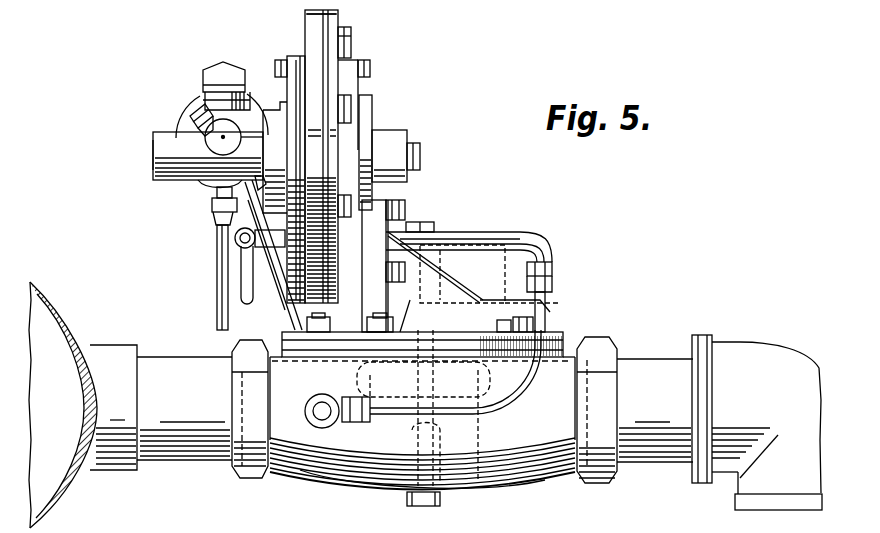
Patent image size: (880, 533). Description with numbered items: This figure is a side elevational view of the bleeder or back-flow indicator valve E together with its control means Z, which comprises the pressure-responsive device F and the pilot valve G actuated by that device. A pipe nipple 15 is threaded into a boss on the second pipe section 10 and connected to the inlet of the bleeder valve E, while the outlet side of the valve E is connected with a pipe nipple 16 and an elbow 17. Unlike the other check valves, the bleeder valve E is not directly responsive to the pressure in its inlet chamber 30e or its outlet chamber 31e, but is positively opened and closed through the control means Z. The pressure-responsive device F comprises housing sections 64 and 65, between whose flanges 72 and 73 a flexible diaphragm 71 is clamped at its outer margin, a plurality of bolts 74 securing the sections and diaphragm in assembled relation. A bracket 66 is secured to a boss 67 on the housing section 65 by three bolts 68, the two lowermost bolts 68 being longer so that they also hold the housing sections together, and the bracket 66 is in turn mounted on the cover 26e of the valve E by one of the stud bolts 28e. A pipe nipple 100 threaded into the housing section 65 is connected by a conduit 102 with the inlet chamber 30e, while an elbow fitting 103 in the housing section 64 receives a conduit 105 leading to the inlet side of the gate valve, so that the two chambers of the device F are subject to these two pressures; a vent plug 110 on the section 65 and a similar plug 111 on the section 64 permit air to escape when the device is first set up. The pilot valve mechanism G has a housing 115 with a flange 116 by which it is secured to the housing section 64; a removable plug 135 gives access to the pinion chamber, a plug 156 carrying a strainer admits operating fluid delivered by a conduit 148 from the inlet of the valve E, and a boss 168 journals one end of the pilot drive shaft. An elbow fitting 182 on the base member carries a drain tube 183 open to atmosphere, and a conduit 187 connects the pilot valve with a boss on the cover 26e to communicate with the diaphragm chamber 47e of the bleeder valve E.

The second pipe section 10 is at (62, 296).
The pipe nipple 15 is at (181, 462).
The pipe nipple 16 is at (657, 462).
The elbow 17 is at (780, 356).
The cover 26e is at (580, 336).
The stud bolts 28e is at (472, 297).
The inlet chamber 30e is at (345, 484).
The outlet chamber 31e is at (545, 474).
The diaphragm chamber 47e is at (530, 328).
The housing section 64 is at (300, 29).
The housing section 65 is at (335, 73).
The bracket 66 is at (456, 290).
The boss 67 is at (354, 292).
The bolts 68 is at (405, 211).
The flexible diaphragm 71 is at (322, 38).
The flange 72 is at (305, 14).
The flange 73 is at (352, 35).
The bolts 74 is at (372, 98).
The pipe nipple 100 is at (492, 236).
The conduit 102 is at (518, 386).
The elbow fitting 103 is at (270, 268).
The conduit 105 is at (240, 264).
The vent plug 110 is at (371, 66).
The plug 111 is at (275, 66).
The pilot valve housing 115 is at (160, 172).
The flange 116 is at (276, 108).
The removable plug 135 is at (190, 112).
The conduit 148 is at (288, 317).
The plug 156 is at (216, 65).
The boss 168 is at (209, 144).
The elbow fitting 182 is at (215, 191).
The drain tube 183 is at (217, 298).
The conduit 187 is at (243, 139).
The bleeder valve E is at (382, 493).
The pressure-responsive device F is at (339, 20).
The pilot valve G is at (153, 155).
The control means Z is at (409, 131).